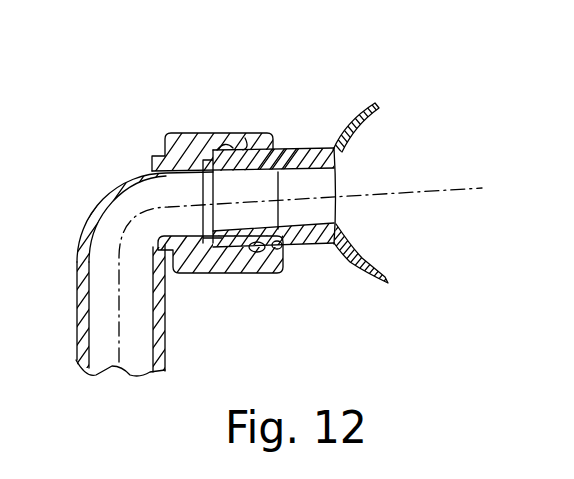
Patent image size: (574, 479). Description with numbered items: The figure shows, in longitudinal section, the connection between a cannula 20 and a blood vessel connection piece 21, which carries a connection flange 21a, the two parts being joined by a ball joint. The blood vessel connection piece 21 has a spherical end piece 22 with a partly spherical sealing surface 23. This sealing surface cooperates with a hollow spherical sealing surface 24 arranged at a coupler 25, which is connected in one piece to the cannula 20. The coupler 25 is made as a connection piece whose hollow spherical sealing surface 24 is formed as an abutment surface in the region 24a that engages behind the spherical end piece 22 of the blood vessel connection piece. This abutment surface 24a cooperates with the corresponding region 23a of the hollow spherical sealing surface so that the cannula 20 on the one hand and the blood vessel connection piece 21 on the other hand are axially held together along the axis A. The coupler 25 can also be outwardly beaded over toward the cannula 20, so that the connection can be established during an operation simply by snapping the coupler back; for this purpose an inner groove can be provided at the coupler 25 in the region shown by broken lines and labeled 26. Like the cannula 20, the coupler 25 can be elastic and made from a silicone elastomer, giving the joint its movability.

The cannula 20 is at (104, 198).
The blood vessel connection piece 21 is at (308, 147).
The connection flange 21a is at (373, 263).
The spherical end piece 22 is at (254, 130).
The partly spherical sealing surface 23 is at (228, 143).
The region of the hollow spherical sealing surface 23a is at (297, 146).
The hollow spherical sealing surface 24 is at (253, 262).
The abutment surface 24a is at (285, 243).
The coupler 25 is at (185, 133).
The inner groove 26 is at (160, 241).
The axis A is at (448, 188).